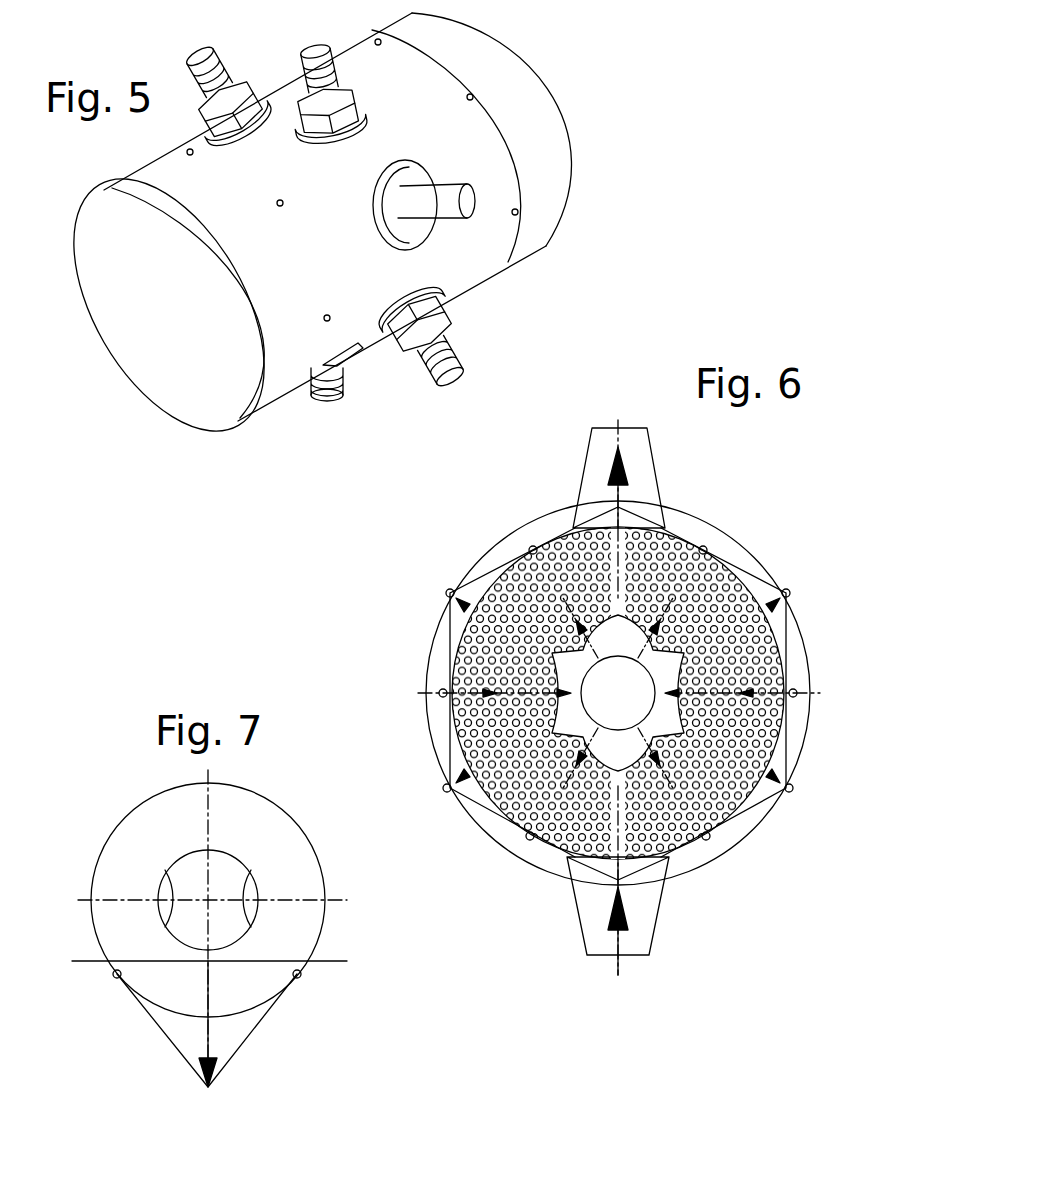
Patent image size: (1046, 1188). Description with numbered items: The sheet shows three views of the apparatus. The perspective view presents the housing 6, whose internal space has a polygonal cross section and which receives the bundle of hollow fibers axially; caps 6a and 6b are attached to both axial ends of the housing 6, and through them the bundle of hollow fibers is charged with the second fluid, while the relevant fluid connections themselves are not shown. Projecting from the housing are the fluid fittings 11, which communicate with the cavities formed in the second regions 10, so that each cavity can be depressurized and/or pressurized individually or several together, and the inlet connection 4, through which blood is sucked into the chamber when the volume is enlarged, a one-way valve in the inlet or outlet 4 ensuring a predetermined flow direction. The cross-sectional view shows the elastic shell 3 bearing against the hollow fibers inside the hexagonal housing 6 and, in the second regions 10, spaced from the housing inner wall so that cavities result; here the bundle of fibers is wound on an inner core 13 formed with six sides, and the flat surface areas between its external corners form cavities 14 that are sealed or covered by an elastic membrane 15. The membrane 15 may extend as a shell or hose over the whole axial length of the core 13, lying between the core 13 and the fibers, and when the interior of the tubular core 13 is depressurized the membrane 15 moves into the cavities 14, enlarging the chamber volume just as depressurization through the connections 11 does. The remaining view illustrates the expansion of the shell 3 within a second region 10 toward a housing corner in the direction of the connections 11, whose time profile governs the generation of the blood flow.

In FIG. 7, the shell 3 is at (322, 926).
In FIG. 5, the inlet connection 4 is at (465, 185).
In FIG. 6, the inlet connection 4 is at (650, 468).
In FIG. 5, the housing 6 is at (440, 113).
In FIG. 5, the cap 6a is at (169, 305).
In FIG. 5, the cap 6b is at (457, 146).
In FIG. 6, the second regions 10 is at (790, 606).
In FIG. 7, the second regions 10 is at (230, 1025).
In FIG. 5, the fluid fittings 11 is at (313, 55).
In FIG. 7, the fluid fittings 11 is at (208, 1095).
In FIG. 6, the inner core 13 is at (677, 648).
In FIG. 6, the cavities 14 is at (618, 693).
In FIG. 6, the elastic membrane 15 is at (618, 693).